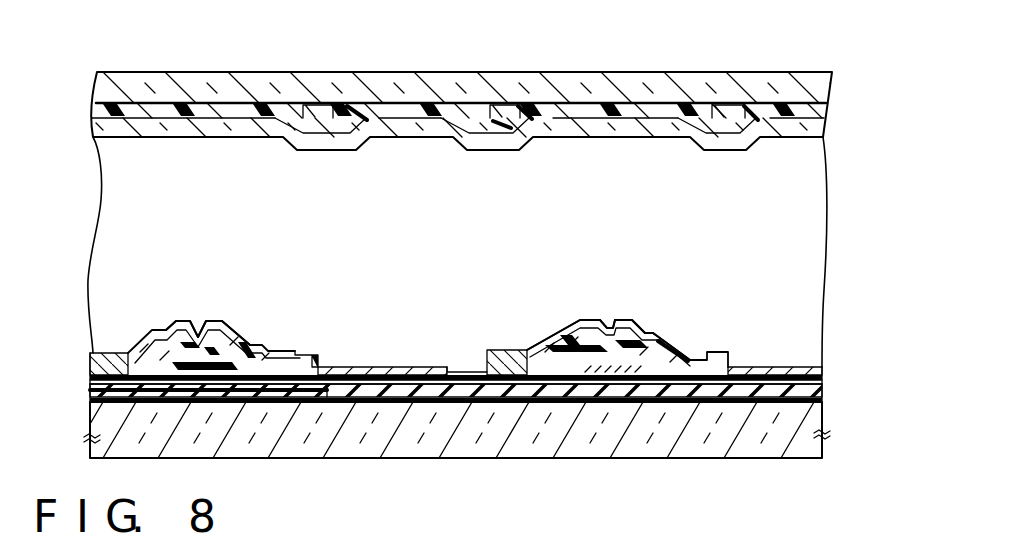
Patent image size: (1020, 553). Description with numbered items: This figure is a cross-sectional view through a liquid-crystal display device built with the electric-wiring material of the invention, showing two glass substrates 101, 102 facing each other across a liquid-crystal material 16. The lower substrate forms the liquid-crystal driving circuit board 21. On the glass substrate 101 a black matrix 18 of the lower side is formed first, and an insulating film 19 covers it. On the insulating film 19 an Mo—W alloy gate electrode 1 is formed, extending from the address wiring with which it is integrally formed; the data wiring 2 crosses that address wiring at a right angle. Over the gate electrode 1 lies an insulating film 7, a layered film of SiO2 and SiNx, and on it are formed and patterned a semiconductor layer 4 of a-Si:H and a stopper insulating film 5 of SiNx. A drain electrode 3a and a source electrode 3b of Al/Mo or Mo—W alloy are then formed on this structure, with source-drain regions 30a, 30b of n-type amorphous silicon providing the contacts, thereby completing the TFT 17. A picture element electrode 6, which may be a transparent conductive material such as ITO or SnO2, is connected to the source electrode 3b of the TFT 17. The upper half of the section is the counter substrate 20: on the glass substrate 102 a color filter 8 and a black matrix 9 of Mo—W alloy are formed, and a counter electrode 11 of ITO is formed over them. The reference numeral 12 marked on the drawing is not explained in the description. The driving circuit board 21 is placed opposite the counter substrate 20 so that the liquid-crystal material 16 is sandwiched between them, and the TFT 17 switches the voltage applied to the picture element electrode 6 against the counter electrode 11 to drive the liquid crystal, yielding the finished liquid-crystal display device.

The gate electrode 1 is at (215, 355).
The data wiring 2 is at (119, 352).
The drain electrode 3a is at (571, 328).
The source electrode 3b is at (679, 349).
The semiconductor layer 4 is at (645, 326).
The stopper insulating film 5 is at (611, 330).
The picture element electrode 6 is at (434, 364).
The insulating film 7 is at (464, 382).
The color filter 8 is at (463, 108).
The black matrix 9 is at (557, 110).
The counter electrode 11 is at (690, 110).
The overcoat layer 12 is at (139, 152).
The liquid-crystal material 16 is at (802, 226).
The TFT 17 is at (172, 320).
The black matrix 18 is at (325, 393).
The insulating film 19 is at (393, 396).
The counter substrate 20 is at (876, 100).
The liquid-crystal driving circuit board 21 is at (876, 362).
The source-drain region 30a is at (238, 340).
The source-drain region 30b is at (196, 326).
The glass substrate 101 is at (826, 420).
The glass substrate 102 is at (814, 70).